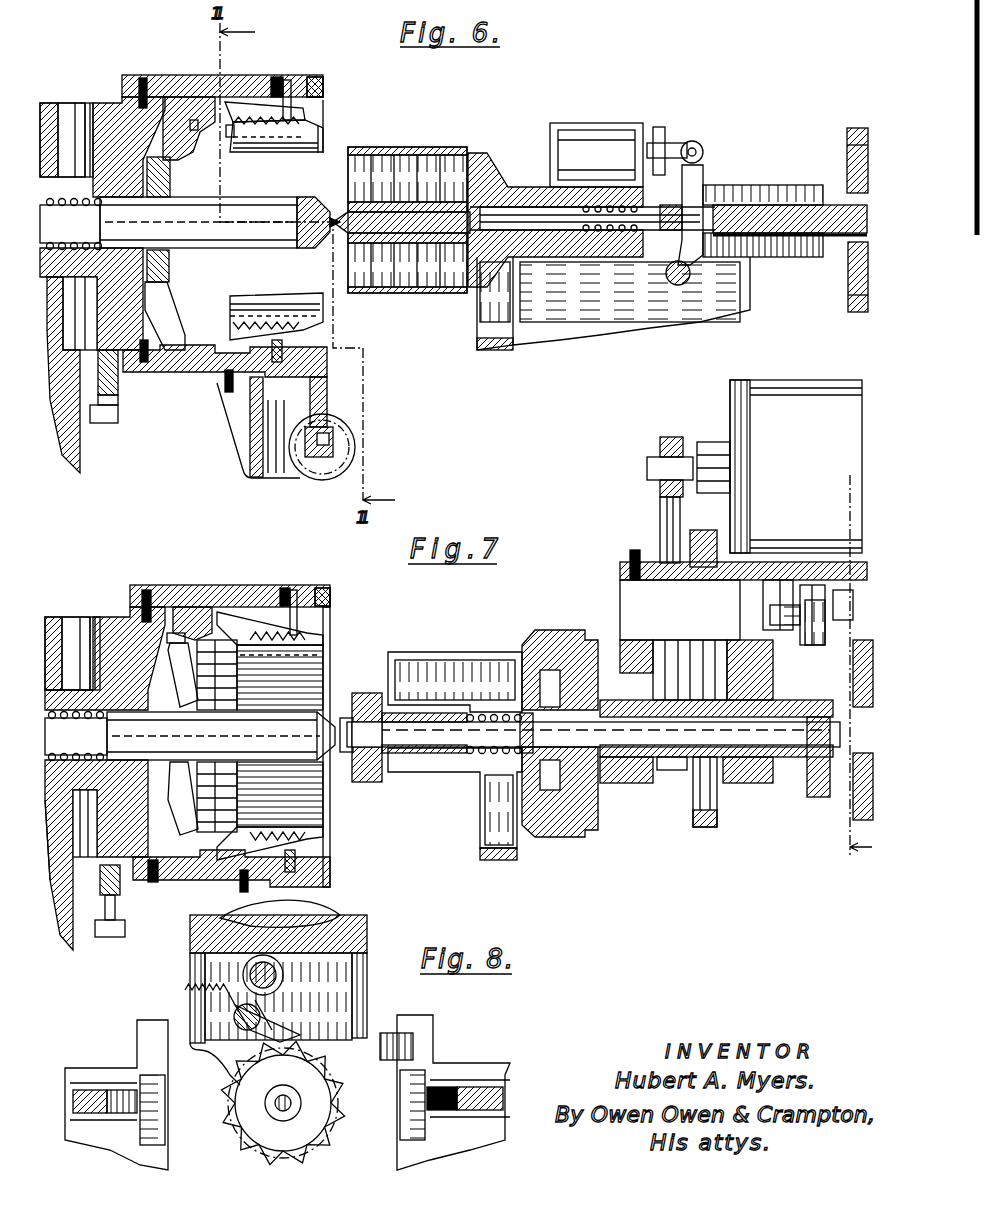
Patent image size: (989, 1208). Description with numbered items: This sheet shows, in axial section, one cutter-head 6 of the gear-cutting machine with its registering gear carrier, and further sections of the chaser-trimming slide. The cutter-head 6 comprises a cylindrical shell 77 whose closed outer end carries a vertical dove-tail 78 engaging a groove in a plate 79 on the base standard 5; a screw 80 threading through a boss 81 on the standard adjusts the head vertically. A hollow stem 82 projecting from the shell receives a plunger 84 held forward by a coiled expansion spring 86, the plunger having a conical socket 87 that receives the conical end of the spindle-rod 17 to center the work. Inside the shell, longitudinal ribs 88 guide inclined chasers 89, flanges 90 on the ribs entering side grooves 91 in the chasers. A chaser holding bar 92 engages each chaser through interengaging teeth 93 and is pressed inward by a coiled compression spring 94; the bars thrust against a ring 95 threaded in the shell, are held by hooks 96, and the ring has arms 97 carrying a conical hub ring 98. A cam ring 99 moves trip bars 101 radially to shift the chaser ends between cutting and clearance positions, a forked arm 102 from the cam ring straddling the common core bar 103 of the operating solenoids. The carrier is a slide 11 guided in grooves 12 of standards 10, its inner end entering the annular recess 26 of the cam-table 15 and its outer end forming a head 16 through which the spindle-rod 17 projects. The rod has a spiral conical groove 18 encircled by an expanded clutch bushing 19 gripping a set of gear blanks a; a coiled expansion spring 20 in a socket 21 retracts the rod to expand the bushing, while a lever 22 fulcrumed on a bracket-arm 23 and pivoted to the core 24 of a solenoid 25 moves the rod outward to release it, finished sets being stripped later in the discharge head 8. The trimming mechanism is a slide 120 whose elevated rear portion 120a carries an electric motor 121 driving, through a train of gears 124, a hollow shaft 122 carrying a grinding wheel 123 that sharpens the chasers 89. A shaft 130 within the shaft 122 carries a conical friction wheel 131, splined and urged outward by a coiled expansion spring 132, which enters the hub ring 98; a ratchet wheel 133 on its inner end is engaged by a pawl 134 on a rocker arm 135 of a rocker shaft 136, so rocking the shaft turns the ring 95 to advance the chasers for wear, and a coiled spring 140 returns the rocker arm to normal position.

In FIG. 6, the base standard 5 is at (73, 437).
In FIG. 7, the base standard 5 is at (70, 940).
In FIG. 6, the cutter-head 6 is at (192, 380).
In FIG. 7, the cutter-head 6 is at (160, 585).
In FIG. 7, the discharge head 8 is at (853, 671).
In FIG. 6, the standards 10 is at (586, 340).
In FIG. 7, the standards 10 is at (470, 760).
In FIG. 8, the standards 10 is at (156, 1126).
In FIG. 6, the slide 11 is at (772, 238).
In FIG. 8, the slide 11 is at (505, 1099).
In FIG. 6, the guide grooves 12 is at (758, 205).
In FIG. 6, the cam-table 15 is at (850, 130).
In FIG. 6, the carrier-head 16 is at (485, 160).
In FIG. 6, the spindle-rod 17 is at (500, 202).
In FIG. 6, the spiral conical groove 18 is at (352, 212).
In FIG. 6, the clutch bushing 19 is at (400, 245).
In FIG. 6, the coiled expansion spring 20 is at (612, 232).
In FIG. 6, the socket 21 is at (628, 232).
In FIG. 6, the lever 22 is at (690, 198).
In FIG. 6, the bracket-arm 23 is at (665, 280).
In FIG. 6, the core 24 is at (683, 145).
In FIG. 6, the solenoid 25 is at (600, 130).
In FIG. 6, the annular recess 26 is at (850, 255).
In FIG. 6, the cylindrical shell 77 is at (238, 80).
In FIG. 7, the cylindrical shell 77 is at (230, 587).
In FIG. 6, the vertical dove-tail 78 is at (105, 112).
In FIG. 7, the vertical dove-tail 78 is at (110, 617).
In FIG. 6, the plate 79 is at (70, 112).
In FIG. 7, the plate 79 is at (78, 617).
In FIG. 6, the screw 80 is at (118, 413).
In FIG. 7, the screw 80 is at (112, 937).
In FIG. 6, the boss 81 is at (118, 373).
In FIG. 6, the stem 82 is at (74, 174).
In FIG. 7, the stem 82 is at (73, 688).
In FIG. 6, the plunger 84 is at (250, 198).
In FIG. 7, the plunger 84 is at (190, 736).
In FIG. 6, the coiled expansion spring 86 is at (78, 206).
In FIG. 6, the socket 87 is at (322, 250).
In FIG. 6, the ribs 88 is at (297, 108).
In FIG. 7, the ribs 88 is at (328, 628).
In FIG. 6, the chasers 89 is at (307, 143).
In FIG. 7, the chasers 89 is at (328, 652).
In FIG. 6, the flanges 90 is at (228, 136).
In FIG. 6, the side grooves 91 is at (323, 140).
In FIG. 6, the chaser holding bar 92 is at (250, 103).
In FIG. 7, the chaser holding bar 92 is at (255, 612).
In FIG. 6, the teeth 93 is at (287, 118).
In FIG. 7, the teeth 93 is at (300, 620).
In FIG. 6, the coiled compression springs 94 is at (280, 80).
In FIG. 7, the coiled compression springs 94 is at (283, 600).
In FIG. 6, the ring 95 is at (178, 100).
In FIG. 7, the ring 95 is at (190, 607).
In FIG. 6, the hooks 96 is at (193, 131).
In FIG. 7, the hooks 96 is at (176, 645).
In FIG. 6, the arms 97 is at (172, 304).
In FIG. 7, the arms 97 is at (175, 862).
In FIG. 6, the hub ring 98 is at (170, 270).
In FIG. 7, the hub ring 98 is at (178, 762).
In FIG. 6, the cam ring 99 is at (325, 83).
In FIG. 7, the cam ring 99 is at (332, 597).
In FIG. 6, the trip bars 101 is at (305, 128).
In FIG. 7, the trip bars 101 is at (335, 648).
In FIG. 6, the forked arm 102 is at (325, 420).
In FIG. 6, the core bar 103 is at (318, 460).
In FIG. 7, the slide 120 is at (740, 785).
In FIG. 8, the slide 120 is at (385, 1033).
In FIG. 7, the elevated rear end portion 120a is at (775, 565).
In FIG. 8, the elevated rear end portion 120a is at (375, 930).
In FIG. 7, the electric motor 121 is at (796, 466).
In FIG. 7, the shaft 122 is at (675, 770).
In FIG. 7, the grinding wheel 123 is at (552, 630).
In FIG. 7, the train of gears 124 is at (700, 550).
In FIG. 7, the shaft 130 is at (630, 785).
In FIG. 8, the shaft 130 is at (287, 1111).
In FIG. 7, the conical friction wheel 131 is at (365, 693).
In FIG. 7, the coiled expansion spring 132 is at (478, 715).
In FIG. 7, the ratchet wheel 133 is at (815, 800).
In FIG. 8, the ratchet wheel 133 is at (240, 1130).
In FIG. 7, the pawl 134 is at (818, 655).
In FIG. 8, the pawl 134 is at (300, 1035).
In FIG. 8, the rocker arm 135 is at (262, 1010).
In FIG. 7, the rocker shaft 136 is at (840, 600).
In FIG. 8, the rocker shaft 136 is at (285, 975).
In FIG. 8, the coiled spring 140 is at (188, 990).
In FIG. 6, the gear blanks a is at (405, 155).